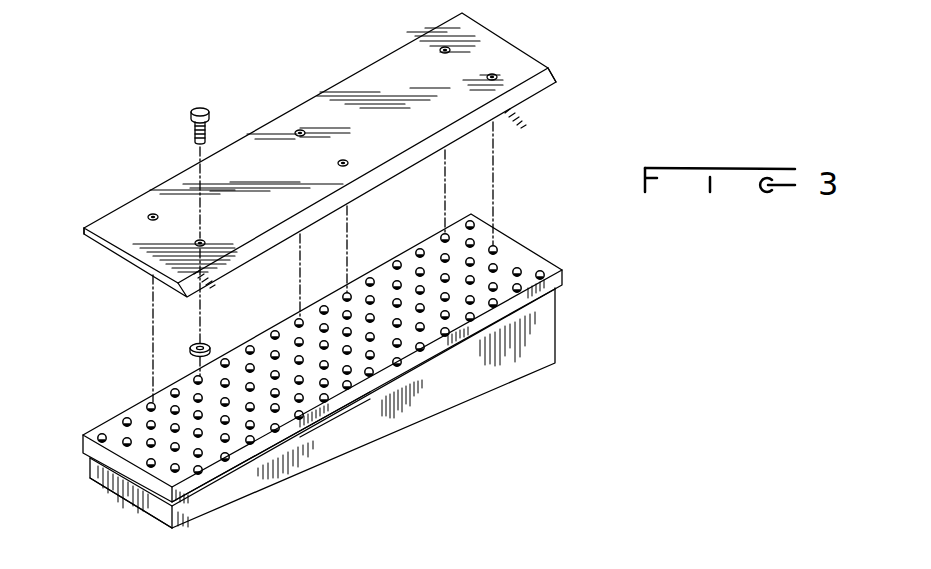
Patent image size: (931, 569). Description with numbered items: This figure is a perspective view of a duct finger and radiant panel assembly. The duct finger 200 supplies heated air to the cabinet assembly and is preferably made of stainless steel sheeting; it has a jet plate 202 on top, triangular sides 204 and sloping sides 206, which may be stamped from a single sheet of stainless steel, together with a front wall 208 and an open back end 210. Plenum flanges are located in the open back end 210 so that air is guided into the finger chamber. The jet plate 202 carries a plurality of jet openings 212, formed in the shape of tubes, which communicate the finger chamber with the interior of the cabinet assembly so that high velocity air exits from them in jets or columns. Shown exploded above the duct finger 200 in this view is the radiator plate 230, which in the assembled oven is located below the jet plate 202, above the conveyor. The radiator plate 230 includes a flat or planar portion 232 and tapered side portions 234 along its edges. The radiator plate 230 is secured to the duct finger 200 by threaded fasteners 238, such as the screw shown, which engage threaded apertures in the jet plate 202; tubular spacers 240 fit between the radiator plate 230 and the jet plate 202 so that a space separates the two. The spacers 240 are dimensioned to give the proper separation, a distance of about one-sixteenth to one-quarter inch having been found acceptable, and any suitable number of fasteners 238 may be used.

The duct finger 200 is at (535, 392).
The jet plate 202 is at (518, 248).
The triangular side 204 is at (544, 330).
The sloping side 206 is at (397, 433).
The front wall 208 is at (130, 496).
The open back end 210 is at (557, 301).
The jet openings 212 is at (397, 281).
The radiator plate 230 is at (505, 36).
The flat or planar portion 232 is at (392, 92).
The tapered side portion 234 is at (545, 80).
The threaded fastener 238 is at (203, 106).
The tubular spacer 240 is at (212, 344).